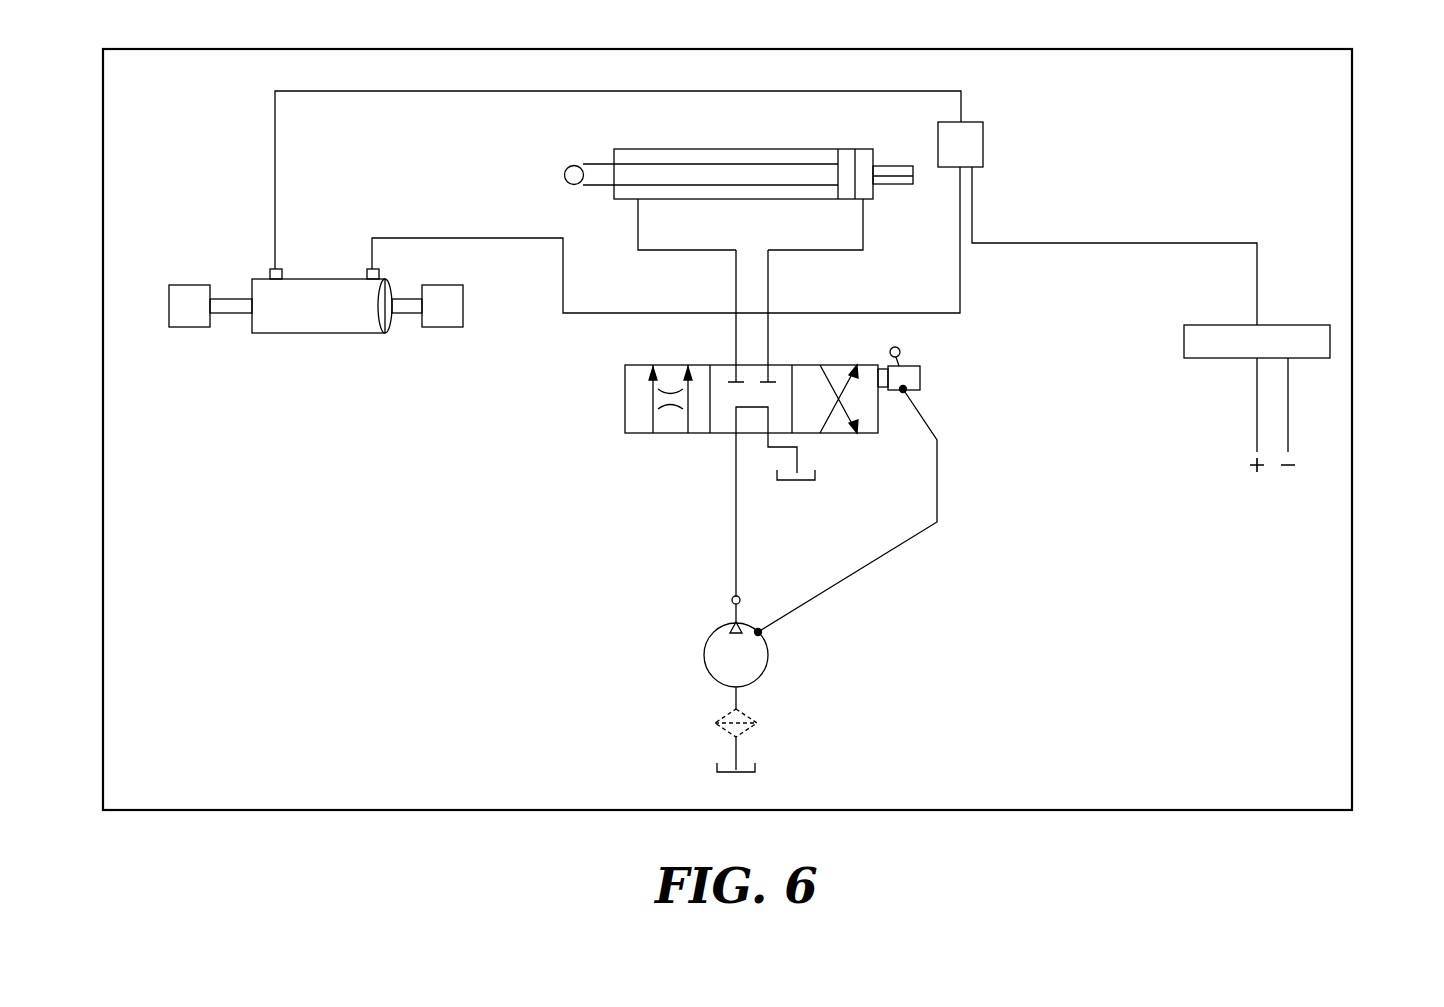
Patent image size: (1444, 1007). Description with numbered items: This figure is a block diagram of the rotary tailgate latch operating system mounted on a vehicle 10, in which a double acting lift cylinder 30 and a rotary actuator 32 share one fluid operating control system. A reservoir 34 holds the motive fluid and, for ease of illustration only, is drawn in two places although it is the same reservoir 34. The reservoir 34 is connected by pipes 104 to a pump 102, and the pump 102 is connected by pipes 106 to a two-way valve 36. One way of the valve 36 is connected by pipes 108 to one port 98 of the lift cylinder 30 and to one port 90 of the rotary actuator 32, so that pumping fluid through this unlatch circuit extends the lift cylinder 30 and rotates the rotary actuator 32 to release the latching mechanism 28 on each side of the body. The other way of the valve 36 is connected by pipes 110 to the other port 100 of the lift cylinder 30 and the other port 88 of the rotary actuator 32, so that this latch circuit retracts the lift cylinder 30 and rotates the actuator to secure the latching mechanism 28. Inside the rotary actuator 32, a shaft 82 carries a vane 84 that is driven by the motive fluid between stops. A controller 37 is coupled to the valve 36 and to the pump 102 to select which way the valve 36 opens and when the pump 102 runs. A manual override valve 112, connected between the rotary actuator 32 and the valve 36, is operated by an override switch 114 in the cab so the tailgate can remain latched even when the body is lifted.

The vehicle 10 is at (1352, 488).
The latching mechanism 28 is at (182, 292).
The lift cylinder 30 is at (826, 155).
The rotary actuator 32 is at (318, 305).
The reservoir 34 is at (815, 472).
The valve 36 is at (697, 433).
The controller 37 is at (905, 366).
The shaft 82 is at (231, 303).
The vane 84 is at (407, 307).
The port 88 is at (367, 272).
The port 90 is at (270, 272).
The port 98 is at (865, 200).
The port 100 is at (638, 200).
The pump 102 is at (753, 658).
The pipes 104 is at (737, 747).
The pipes 106 is at (737, 540).
The pipes 108 is at (768, 269).
The pipes 110 is at (736, 269).
The manual override valve 112 is at (970, 132).
The override switch 114 is at (1280, 330).